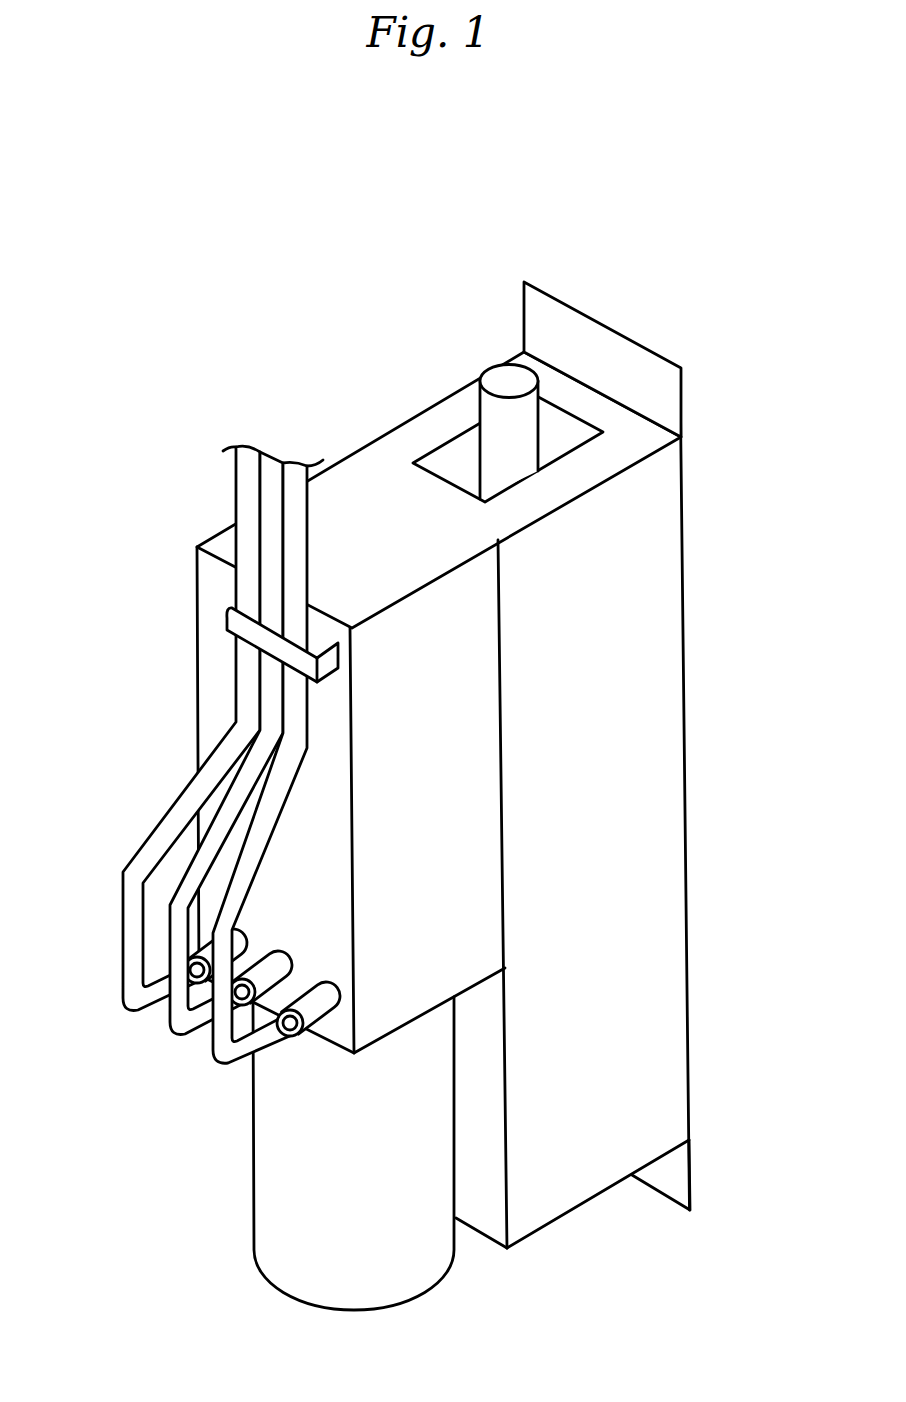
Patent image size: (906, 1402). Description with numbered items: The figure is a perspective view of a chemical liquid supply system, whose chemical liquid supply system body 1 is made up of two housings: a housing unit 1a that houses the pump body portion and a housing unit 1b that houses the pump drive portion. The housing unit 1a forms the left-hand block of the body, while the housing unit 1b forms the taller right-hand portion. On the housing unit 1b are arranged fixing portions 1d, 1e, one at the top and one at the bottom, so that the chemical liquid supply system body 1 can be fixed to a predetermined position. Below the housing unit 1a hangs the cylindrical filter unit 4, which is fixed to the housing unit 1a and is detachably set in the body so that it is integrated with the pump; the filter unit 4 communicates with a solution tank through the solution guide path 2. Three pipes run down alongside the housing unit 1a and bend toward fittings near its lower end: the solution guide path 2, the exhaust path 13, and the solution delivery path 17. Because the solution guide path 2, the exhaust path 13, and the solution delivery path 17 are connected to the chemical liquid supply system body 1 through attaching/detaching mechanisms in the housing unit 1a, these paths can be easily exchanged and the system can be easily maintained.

The chemical liquid supply system body 1 is at (697, 517).
The housing unit 1a is at (205, 680).
The housing unit 1b is at (673, 722).
The fixing portion 1d is at (662, 393).
The fixing portion 1e is at (675, 1172).
The solution guide path 2 is at (133, 983).
The solution delivery path 17 is at (180, 1025).
The exhaust path 13 is at (225, 1063).
The filter unit 4 is at (273, 1192).